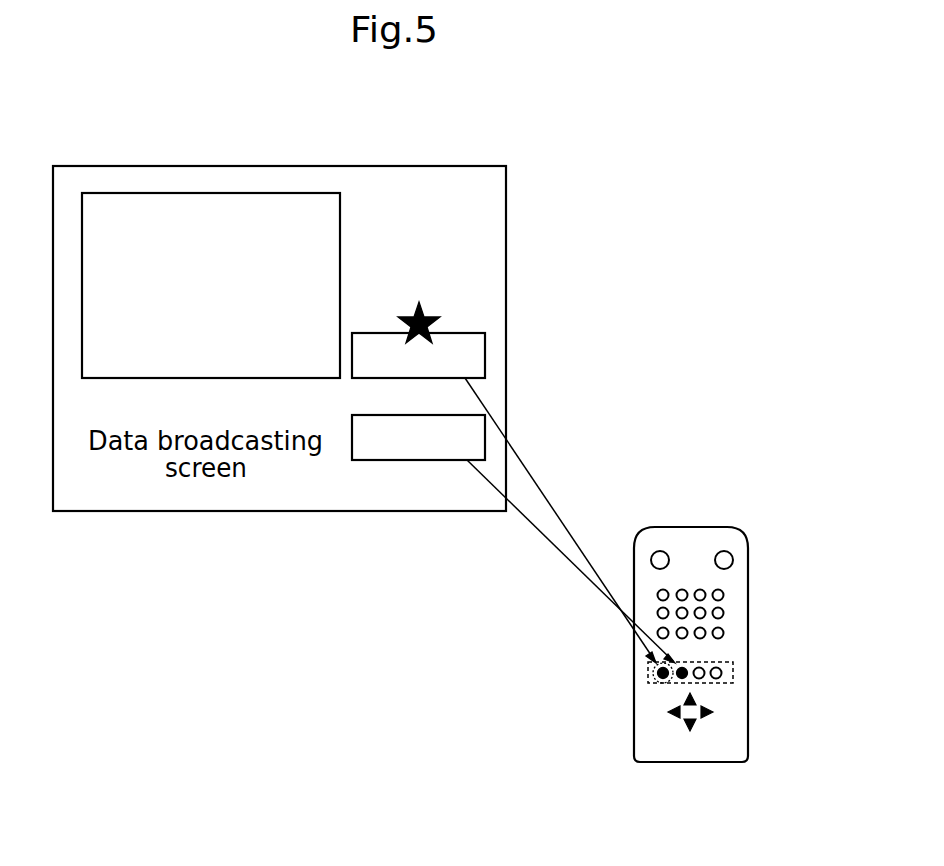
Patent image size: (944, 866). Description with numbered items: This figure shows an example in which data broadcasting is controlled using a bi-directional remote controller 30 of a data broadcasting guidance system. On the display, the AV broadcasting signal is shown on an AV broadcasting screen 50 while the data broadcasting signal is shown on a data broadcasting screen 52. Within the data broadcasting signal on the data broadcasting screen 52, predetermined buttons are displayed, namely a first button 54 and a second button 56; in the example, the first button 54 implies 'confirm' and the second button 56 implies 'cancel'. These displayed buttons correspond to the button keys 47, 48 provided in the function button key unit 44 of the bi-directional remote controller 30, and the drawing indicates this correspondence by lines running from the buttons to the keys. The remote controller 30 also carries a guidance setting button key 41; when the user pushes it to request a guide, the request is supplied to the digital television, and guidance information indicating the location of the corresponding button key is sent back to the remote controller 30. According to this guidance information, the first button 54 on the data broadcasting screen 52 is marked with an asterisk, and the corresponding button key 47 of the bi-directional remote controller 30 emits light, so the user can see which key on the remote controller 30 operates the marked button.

The bi-directional remote controller 30 is at (733, 530).
The guidance setting button key 41 is at (733, 560).
The function button key unit 44 is at (733, 672).
The button key 47 is at (660, 679).
The button key 48 is at (680, 680).
The AV broadcasting screen 50 is at (212, 192).
The data broadcasting screen 52 is at (506, 233).
The button 1 54 is at (485, 352).
The button 2 56 is at (485, 437).